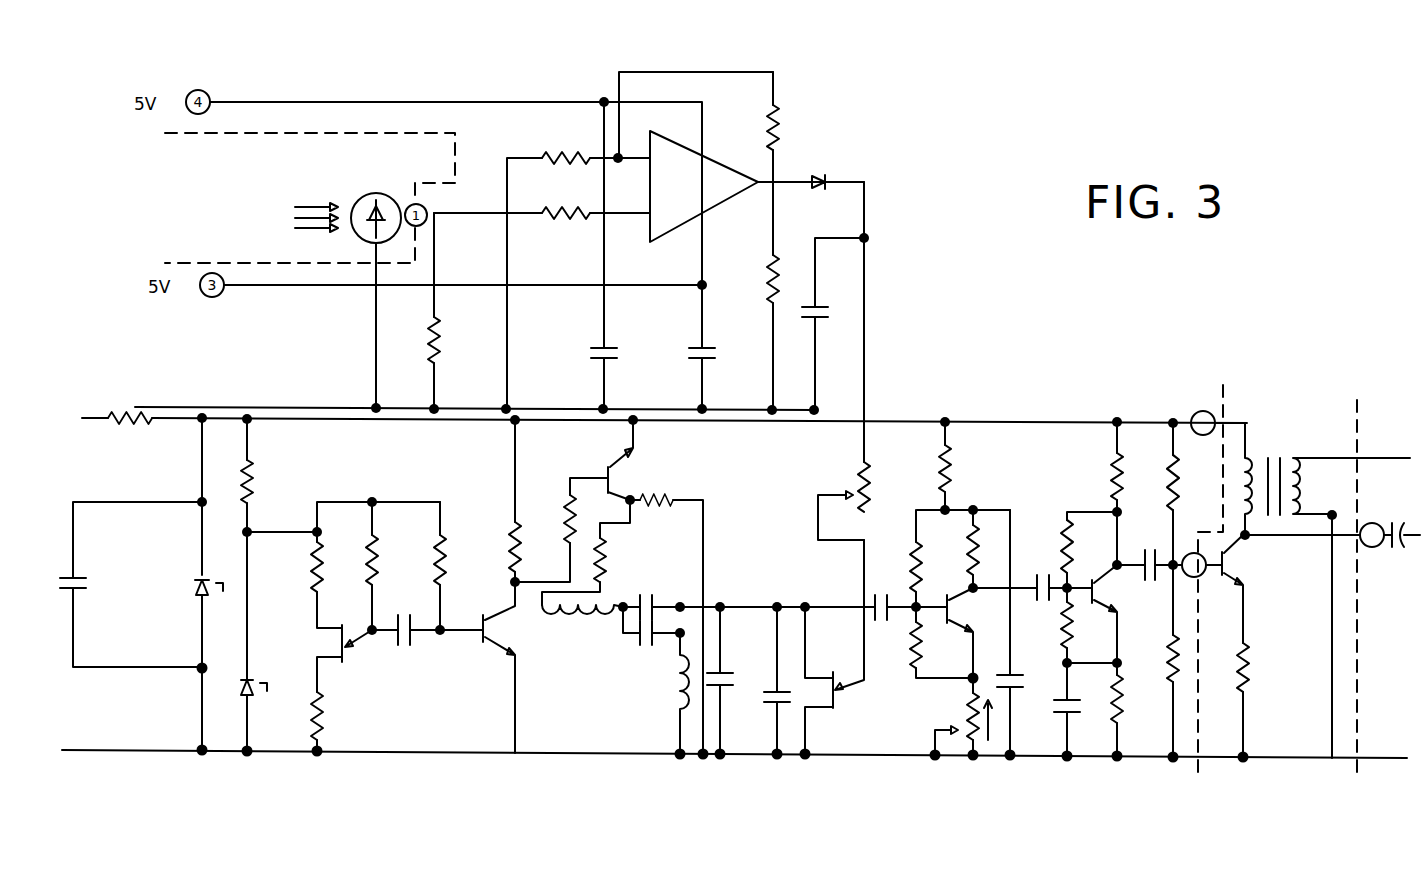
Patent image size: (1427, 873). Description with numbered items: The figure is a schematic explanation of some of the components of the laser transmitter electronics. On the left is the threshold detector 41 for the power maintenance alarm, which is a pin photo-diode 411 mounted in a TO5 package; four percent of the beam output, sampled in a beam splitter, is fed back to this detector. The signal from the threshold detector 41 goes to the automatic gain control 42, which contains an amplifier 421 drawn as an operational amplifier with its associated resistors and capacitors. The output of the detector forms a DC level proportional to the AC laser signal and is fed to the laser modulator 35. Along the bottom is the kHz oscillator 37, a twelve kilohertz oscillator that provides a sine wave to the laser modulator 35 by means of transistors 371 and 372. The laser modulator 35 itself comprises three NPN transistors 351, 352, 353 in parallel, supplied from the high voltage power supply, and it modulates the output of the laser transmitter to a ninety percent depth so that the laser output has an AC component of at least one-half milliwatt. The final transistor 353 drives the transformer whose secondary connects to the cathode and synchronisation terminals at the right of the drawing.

The laser modulator 35 is at (1165, 566).
The kHz oscillator 37 is at (488, 589).
The threshold detector 41 is at (381, 196).
The automatic gain control 42 is at (688, 240).
The pin photo-diode 411 is at (300, 200).
The amplifier 421 is at (695, 174).
The transistor 371 is at (733, 458).
The transistor 372 is at (493, 599).
The NPN transistor 351 is at (958, 587).
The NPN transistor 352 is at (1118, 592).
The NPN transistor 353 is at (1300, 629).